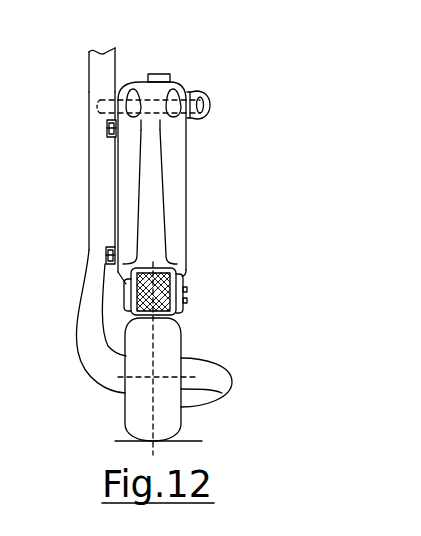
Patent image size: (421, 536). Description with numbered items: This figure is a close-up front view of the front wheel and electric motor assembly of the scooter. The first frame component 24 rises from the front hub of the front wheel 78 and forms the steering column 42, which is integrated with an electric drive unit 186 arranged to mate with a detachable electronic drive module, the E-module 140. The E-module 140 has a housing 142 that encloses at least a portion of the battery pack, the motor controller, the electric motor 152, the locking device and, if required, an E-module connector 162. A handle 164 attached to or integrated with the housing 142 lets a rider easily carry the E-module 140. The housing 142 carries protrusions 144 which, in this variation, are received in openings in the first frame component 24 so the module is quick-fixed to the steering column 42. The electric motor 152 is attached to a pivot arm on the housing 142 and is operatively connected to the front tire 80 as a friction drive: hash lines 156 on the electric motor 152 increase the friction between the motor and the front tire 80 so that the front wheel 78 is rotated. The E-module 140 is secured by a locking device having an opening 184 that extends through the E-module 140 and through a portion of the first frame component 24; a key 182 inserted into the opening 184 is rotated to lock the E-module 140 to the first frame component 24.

The first frame component 24 is at (100, 218).
The steering column 42 is at (108, 67).
The front wheel 78 is at (180, 342).
The front tire 80 is at (142, 341).
The detachable electronic drive module (E-module) 140 is at (178, 205).
The housing 142 is at (186, 155).
The protrusions 144 is at (107, 134).
The electric motor 152 is at (178, 314).
The hash lines 156 is at (163, 287).
The E-module connector 162 is at (160, 75).
The handle 164 is at (178, 89).
The key 182 is at (211, 106).
The opening 184 is at (117, 100).
The electric drive unit 186 is at (194, 241).